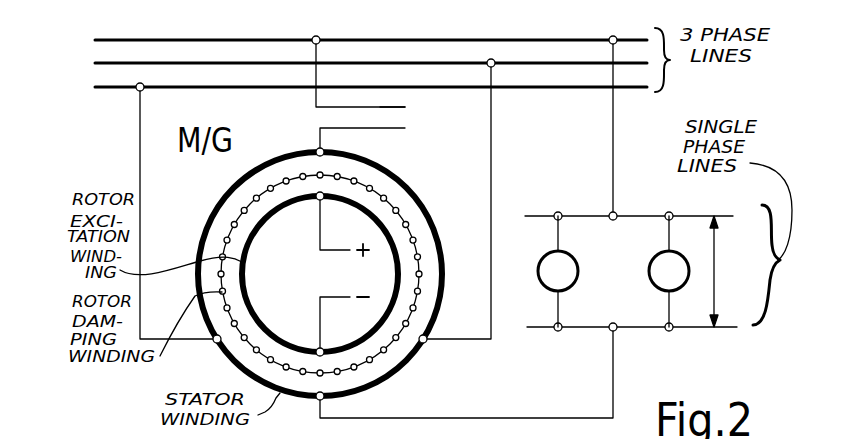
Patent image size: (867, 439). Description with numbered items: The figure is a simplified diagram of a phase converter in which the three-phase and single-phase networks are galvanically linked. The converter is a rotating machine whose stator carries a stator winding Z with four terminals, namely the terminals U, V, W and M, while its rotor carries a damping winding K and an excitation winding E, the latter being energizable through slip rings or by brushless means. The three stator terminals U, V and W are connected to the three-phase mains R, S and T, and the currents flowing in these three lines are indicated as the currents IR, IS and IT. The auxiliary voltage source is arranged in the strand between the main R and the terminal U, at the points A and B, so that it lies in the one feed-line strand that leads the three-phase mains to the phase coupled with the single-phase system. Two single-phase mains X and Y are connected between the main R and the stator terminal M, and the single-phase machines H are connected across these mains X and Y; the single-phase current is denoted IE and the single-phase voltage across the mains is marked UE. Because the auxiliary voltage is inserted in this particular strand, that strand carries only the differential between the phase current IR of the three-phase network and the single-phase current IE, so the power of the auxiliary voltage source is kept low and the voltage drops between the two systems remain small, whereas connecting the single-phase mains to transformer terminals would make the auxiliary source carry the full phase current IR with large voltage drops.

The three-phase main R is at (356, 40).
The three-phase main S is at (356, 63).
The three-phase main T is at (356, 89).
The connection point A is at (407, 99).
The connection point B is at (377, 133).
The stator winding terminal U is at (304, 135).
The stator winding terminal V is at (434, 356).
The stator winding terminal W is at (204, 358).
The stator winding terminal M is at (453, 382).
The damping winding K is at (229, 235).
The stator winding Z is at (425, 212).
The excitation winding E is at (245, 252).
The single-phase main X is at (637, 197).
The single-phase main Y is at (637, 344).
The machines H is at (613, 271).
The current in line T IT is at (166, 211).
The phase current in main R IR is at (347, 83).
The current in line S IS is at (471, 199).
The single-phase current IE is at (626, 126).
The single-phase voltage UE is at (734, 271).